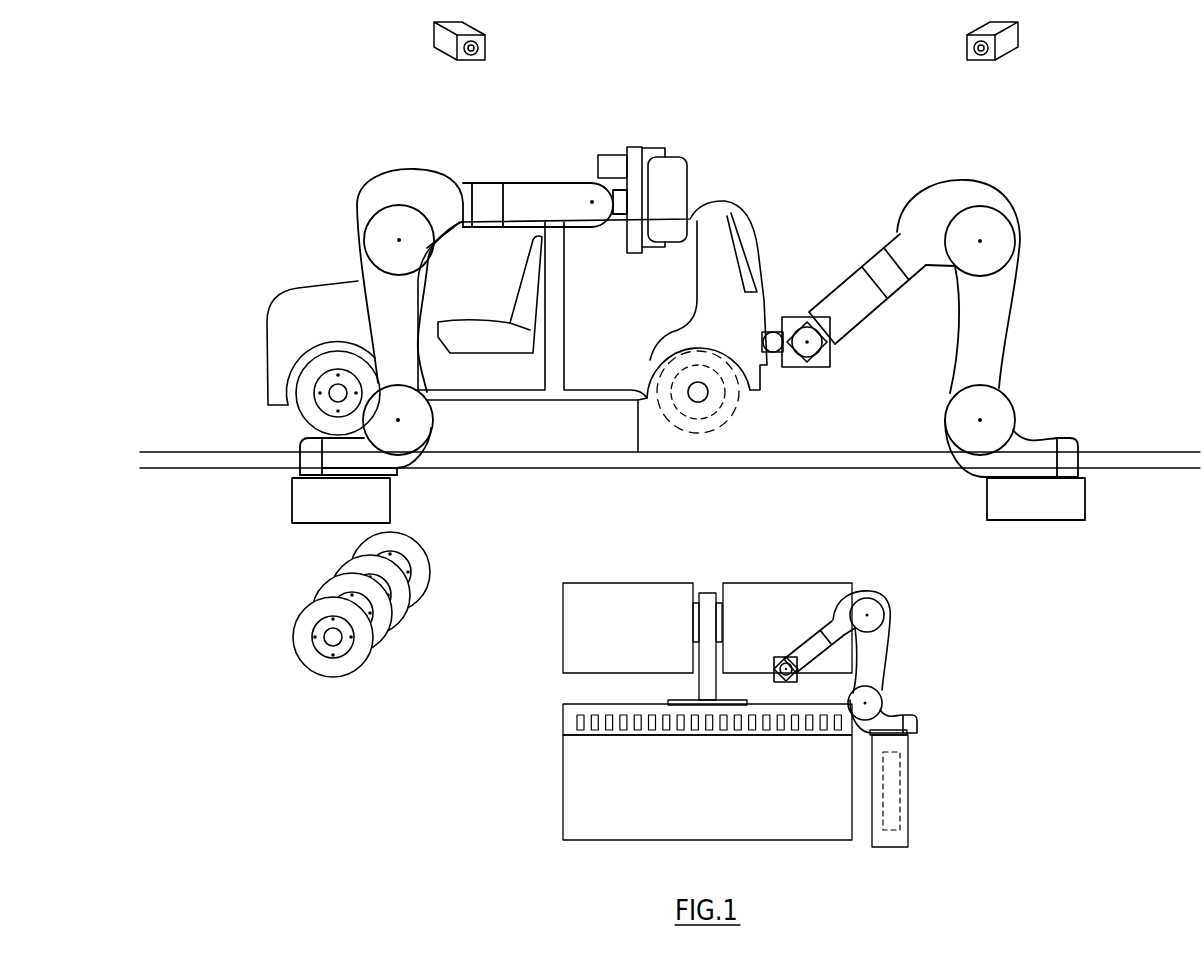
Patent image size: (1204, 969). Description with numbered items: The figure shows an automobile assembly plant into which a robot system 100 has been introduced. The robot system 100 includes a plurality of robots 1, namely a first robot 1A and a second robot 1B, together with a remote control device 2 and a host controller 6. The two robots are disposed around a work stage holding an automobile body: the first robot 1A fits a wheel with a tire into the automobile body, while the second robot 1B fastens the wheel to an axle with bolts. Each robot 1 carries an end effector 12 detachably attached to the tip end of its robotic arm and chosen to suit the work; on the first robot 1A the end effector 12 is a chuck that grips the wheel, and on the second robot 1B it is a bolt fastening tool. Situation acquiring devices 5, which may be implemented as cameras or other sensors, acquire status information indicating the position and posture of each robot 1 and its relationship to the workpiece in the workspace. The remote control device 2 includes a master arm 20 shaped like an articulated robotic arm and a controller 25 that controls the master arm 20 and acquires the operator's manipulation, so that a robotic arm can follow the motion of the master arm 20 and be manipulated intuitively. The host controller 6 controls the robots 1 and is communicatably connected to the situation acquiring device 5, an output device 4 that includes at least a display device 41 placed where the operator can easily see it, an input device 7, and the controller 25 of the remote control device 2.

The robot system 100 is at (1108, 136).
The robot 1 is at (722, 312).
The first robot 1A is at (363, 177).
The second robot 1B is at (1046, 302).
The situation acquiring device 5 is at (455, 60).
The end effector 12 is at (655, 150).
The output device 4 is at (711, 632).
The display device 41 is at (563, 630).
The master arm 20 is at (889, 676).
The input device 7 is at (571, 721).
The host controller 6 is at (563, 762).
The remote control device 2 is at (932, 749).
The controller 25 is at (910, 800).